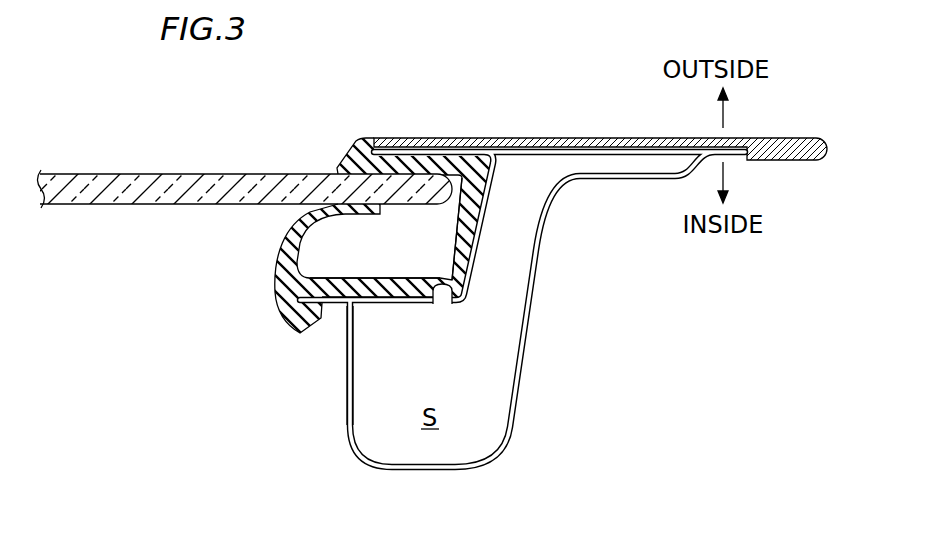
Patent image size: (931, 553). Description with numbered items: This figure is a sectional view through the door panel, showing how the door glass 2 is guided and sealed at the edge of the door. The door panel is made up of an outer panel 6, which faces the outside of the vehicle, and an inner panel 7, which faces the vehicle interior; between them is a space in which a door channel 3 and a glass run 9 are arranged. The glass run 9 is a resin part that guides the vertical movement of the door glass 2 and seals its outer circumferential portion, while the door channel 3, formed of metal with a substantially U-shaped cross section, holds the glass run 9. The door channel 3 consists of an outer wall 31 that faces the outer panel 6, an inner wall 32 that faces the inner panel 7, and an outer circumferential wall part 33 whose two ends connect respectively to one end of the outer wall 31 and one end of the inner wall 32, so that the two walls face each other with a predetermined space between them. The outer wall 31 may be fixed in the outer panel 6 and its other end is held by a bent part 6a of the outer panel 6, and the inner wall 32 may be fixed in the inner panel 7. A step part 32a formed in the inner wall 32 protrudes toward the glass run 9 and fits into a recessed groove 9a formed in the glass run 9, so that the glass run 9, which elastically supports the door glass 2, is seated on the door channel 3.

The door glass 2 is at (152, 173).
The door channel 3 is at (508, 276).
The outer panel 6 is at (518, 138).
The bent part 6a is at (347, 152).
The inner panel 7 is at (515, 409).
The glass run 9 is at (275, 293).
The recessed groove 9a is at (448, 305).
The outer wall 31 is at (428, 137).
The inner wall 32 is at (378, 304).
The step part 32a is at (440, 279).
The outer circumferential wall part 33 is at (490, 207).